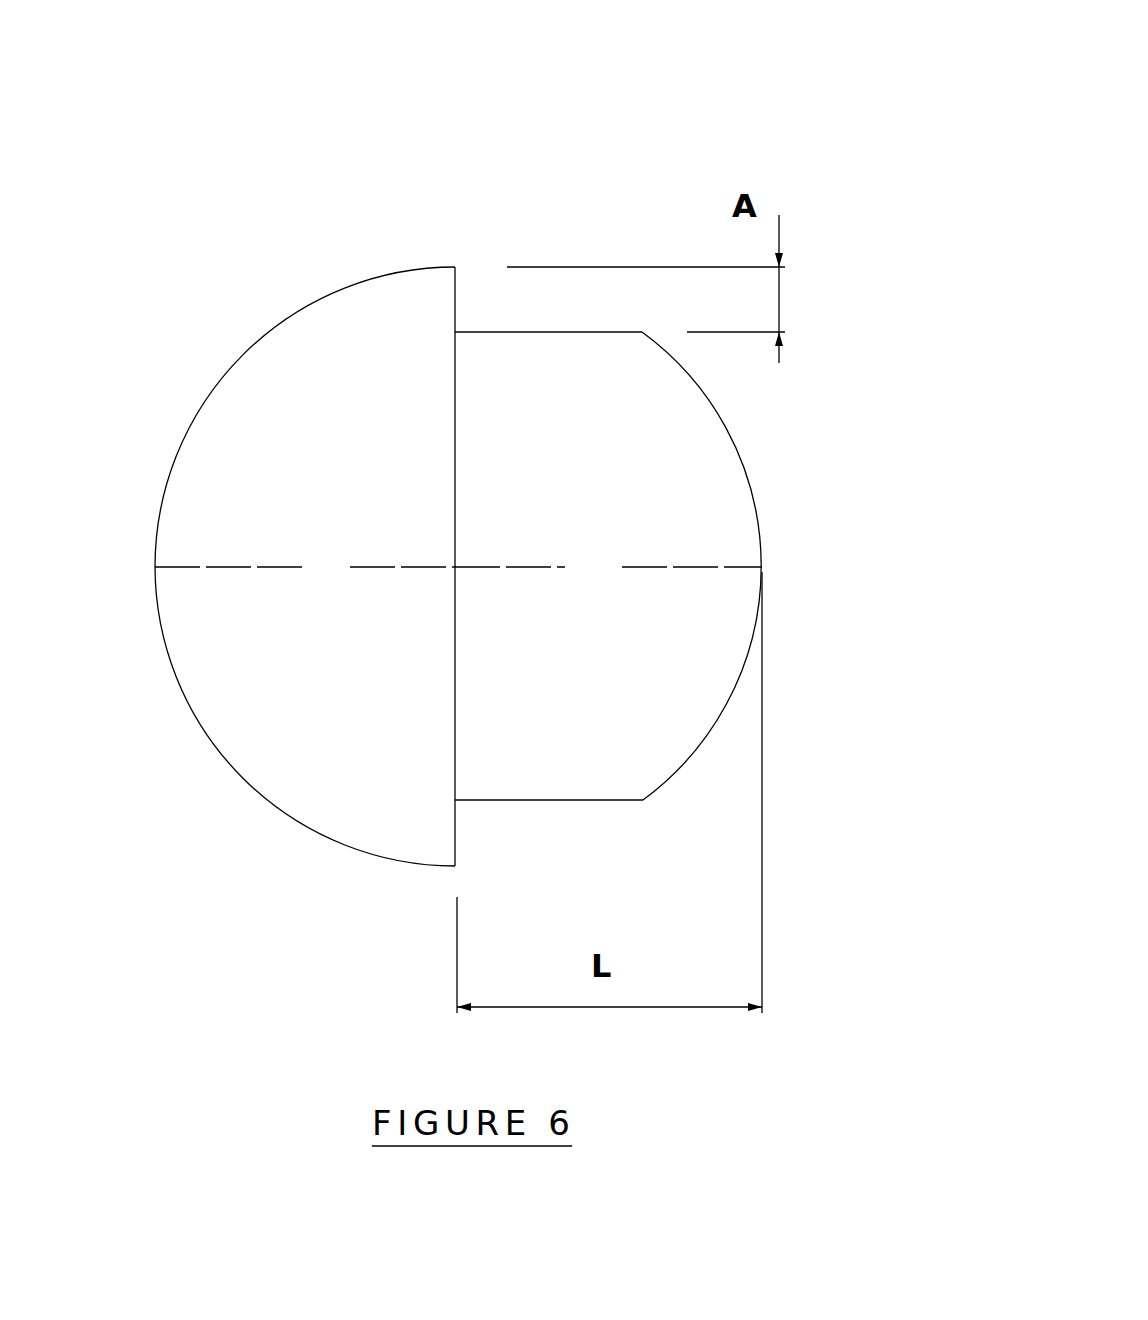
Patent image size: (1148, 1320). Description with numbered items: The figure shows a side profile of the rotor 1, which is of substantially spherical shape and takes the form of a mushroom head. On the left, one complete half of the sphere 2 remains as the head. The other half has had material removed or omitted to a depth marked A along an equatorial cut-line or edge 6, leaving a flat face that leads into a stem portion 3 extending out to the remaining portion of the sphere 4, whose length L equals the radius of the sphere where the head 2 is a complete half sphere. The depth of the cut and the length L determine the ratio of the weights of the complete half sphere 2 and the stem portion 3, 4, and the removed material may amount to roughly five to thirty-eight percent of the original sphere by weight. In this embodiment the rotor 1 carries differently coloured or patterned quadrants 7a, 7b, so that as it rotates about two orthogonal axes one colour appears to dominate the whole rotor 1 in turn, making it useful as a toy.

The rotor 1 is at (526, 488).
The complete half of the sphere 2 is at (270, 546).
The stem portion 3 is at (710, 566).
The remaining portion of the sphere 4 is at (804, 566).
The equatorial cut-line or edge 6 is at (408, 888).
The coloured or patterned quadrant 7a is at (270, 353).
The coloured or patterned quadrant 7b is at (346, 582).